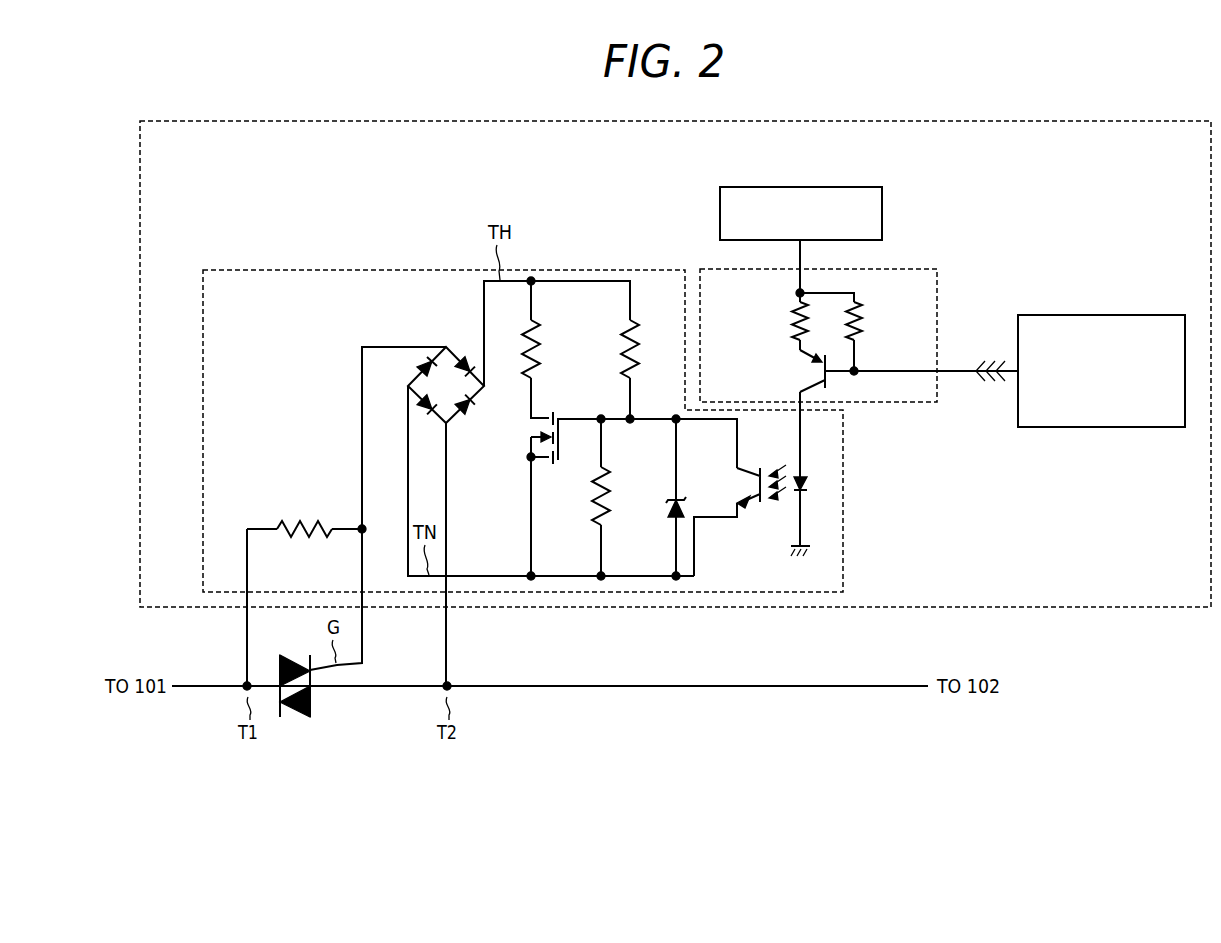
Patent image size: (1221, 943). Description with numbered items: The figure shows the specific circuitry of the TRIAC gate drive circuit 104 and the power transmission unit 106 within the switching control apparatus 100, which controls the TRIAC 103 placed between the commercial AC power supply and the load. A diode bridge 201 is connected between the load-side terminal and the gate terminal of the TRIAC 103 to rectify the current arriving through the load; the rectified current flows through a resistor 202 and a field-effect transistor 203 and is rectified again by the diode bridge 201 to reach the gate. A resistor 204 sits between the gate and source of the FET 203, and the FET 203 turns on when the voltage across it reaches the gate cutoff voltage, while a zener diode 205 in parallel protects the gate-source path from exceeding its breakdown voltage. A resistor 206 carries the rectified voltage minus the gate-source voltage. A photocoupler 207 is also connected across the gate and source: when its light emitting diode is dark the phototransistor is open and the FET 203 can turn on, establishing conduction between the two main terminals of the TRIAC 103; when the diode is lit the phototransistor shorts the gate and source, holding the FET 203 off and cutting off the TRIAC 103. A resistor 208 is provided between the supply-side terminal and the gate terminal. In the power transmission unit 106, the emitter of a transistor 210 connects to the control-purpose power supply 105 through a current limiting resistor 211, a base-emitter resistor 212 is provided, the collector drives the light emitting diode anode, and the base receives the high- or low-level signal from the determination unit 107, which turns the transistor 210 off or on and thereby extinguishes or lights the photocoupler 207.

The switching control apparatus 100 is at (902, 121).
The TRIAC 103 is at (295, 717).
The TRIAC gate drive circuit 104 is at (632, 270).
The control-purpose power supply 105 is at (835, 187).
The power transmission unit 106 is at (883, 270).
The determination unit 107 is at (1125, 313).
The diode bridge 201 is at (447, 345).
The resistor 202 is at (541, 338).
The field-effect transistor 203 is at (545, 417).
The resistor 204 is at (608, 487).
The zener diode 205 is at (665, 512).
The resistor 206 is at (640, 338).
The photocoupler 207 is at (808, 487).
The resistor 208 is at (308, 525).
The transistor 210 is at (808, 368).
The current limiting resistor 211 is at (793, 310).
The base-emitter resistor 212 is at (862, 315).